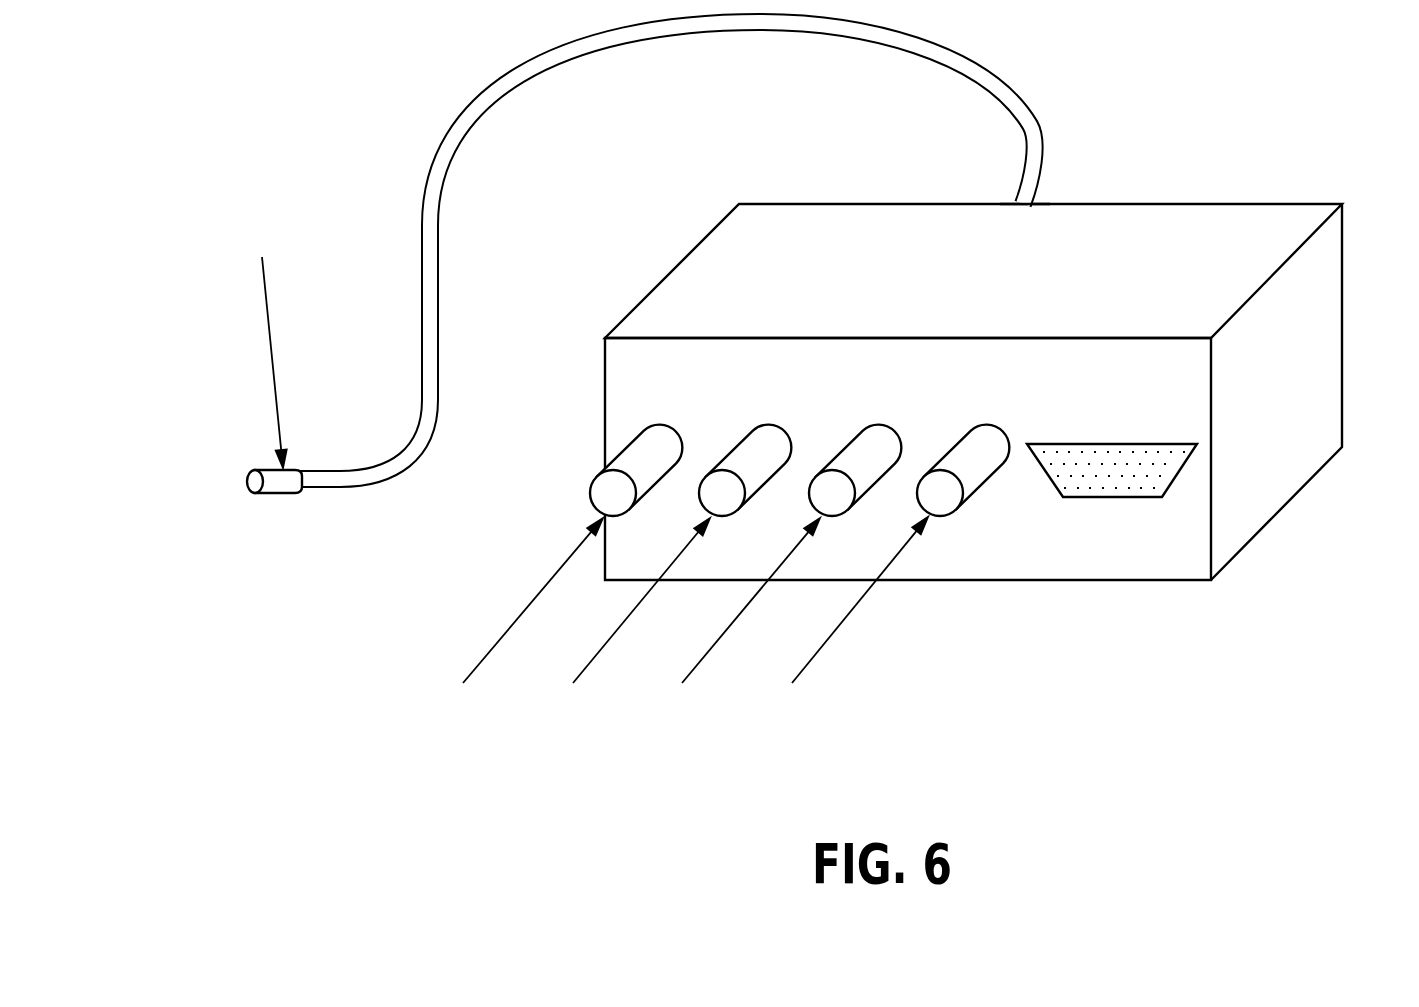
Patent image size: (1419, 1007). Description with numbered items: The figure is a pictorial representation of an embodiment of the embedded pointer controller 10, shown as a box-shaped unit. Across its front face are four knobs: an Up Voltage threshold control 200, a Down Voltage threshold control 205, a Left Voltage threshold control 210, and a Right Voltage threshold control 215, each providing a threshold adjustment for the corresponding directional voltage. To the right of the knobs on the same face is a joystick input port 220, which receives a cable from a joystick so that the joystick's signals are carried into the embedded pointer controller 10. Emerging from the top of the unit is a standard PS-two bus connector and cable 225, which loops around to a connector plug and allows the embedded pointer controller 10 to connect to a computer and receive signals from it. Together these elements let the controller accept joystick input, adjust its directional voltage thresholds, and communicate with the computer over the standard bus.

The embedded pointer controller 10 is at (1342, 337).
The Up Voltage threshold control 200 is at (592, 482).
The Down Voltage threshold control 205 is at (738, 518).
The Left Voltage threshold control 210 is at (848, 518).
The Right Voltage threshold control 215 is at (952, 516).
The joystick input port 220 is at (1116, 523).
The standard PS/2 bus connector and cable 225 is at (488, 90).